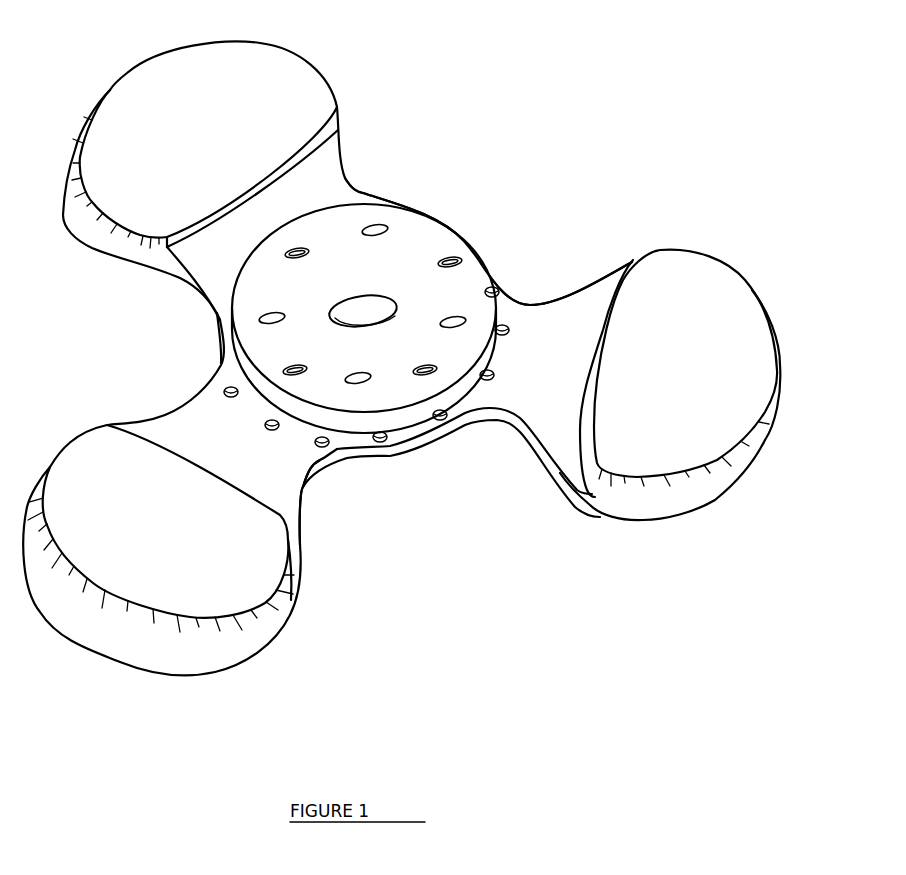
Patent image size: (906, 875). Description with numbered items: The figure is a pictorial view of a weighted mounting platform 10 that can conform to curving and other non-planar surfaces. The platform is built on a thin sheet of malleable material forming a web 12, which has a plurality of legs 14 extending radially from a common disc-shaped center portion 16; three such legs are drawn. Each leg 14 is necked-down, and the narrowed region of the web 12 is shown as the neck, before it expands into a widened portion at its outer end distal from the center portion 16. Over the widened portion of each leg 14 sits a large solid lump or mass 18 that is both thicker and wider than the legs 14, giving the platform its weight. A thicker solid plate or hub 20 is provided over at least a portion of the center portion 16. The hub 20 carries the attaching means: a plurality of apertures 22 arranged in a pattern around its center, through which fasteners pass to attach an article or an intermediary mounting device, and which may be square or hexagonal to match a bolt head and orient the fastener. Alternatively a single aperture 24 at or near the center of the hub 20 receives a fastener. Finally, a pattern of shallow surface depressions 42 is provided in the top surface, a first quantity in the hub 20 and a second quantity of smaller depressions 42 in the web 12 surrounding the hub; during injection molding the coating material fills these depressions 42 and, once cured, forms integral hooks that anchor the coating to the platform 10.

The weighted mounting platform 10 is at (630, 176).
The web 12 is at (217, 327).
The legs 14 is at (353, 175).
The center portion 16 is at (390, 457).
The mass 18 is at (337, 80).
The hub 20 is at (443, 220).
The apertures 22 is at (373, 236).
The aperture 24 is at (378, 298).
The surface depressions 42 is at (301, 258).